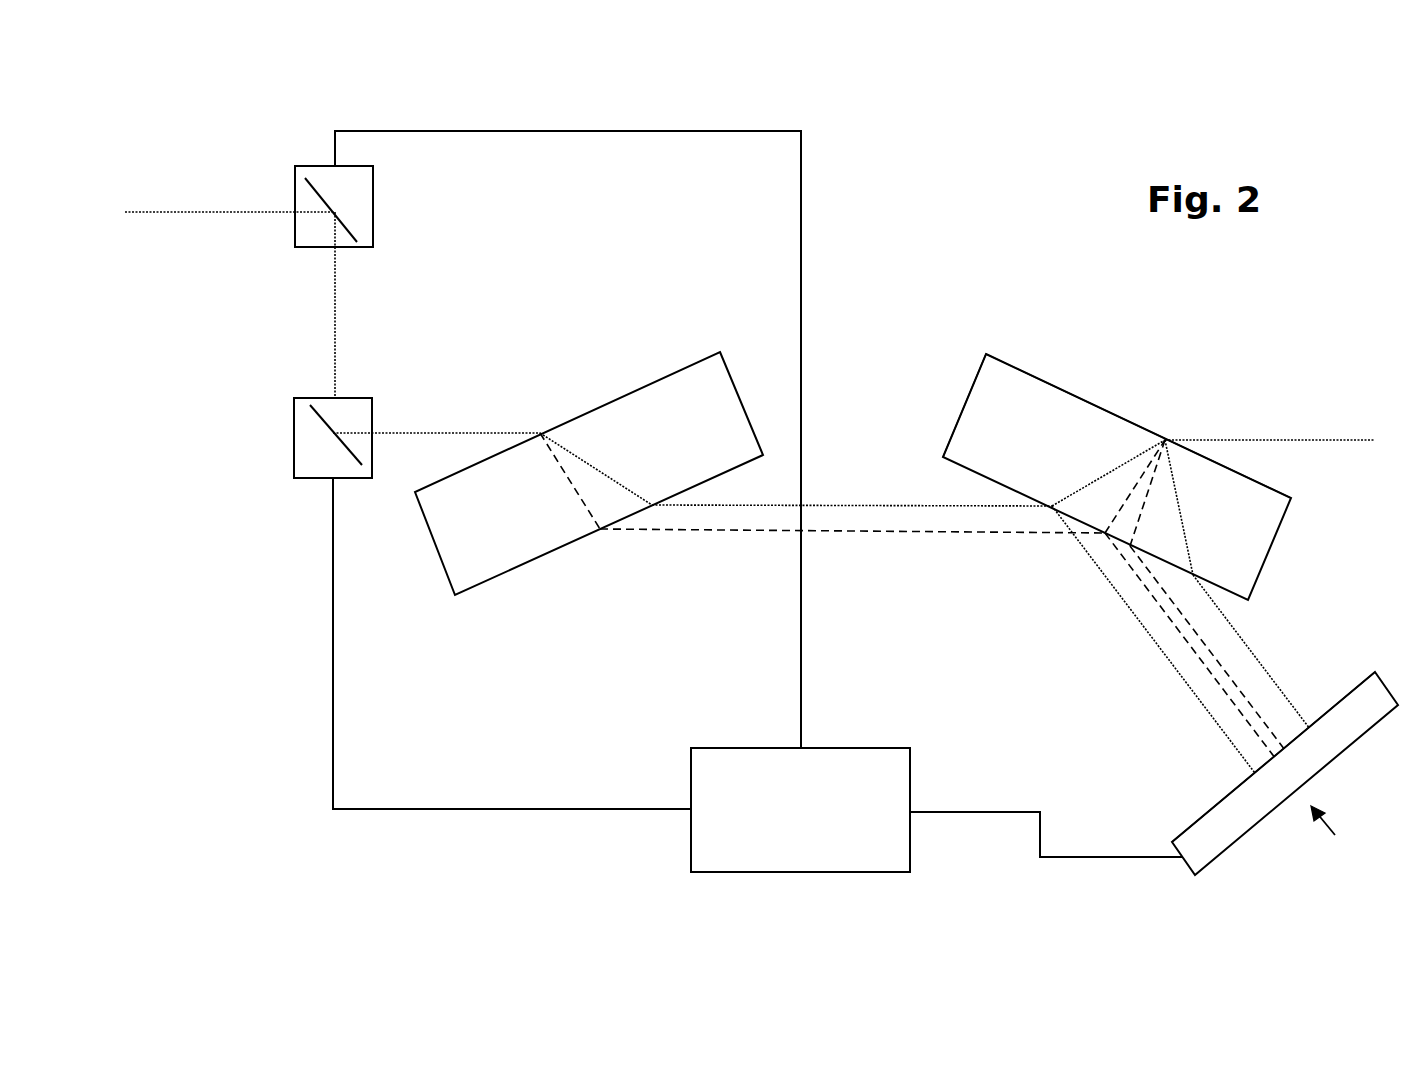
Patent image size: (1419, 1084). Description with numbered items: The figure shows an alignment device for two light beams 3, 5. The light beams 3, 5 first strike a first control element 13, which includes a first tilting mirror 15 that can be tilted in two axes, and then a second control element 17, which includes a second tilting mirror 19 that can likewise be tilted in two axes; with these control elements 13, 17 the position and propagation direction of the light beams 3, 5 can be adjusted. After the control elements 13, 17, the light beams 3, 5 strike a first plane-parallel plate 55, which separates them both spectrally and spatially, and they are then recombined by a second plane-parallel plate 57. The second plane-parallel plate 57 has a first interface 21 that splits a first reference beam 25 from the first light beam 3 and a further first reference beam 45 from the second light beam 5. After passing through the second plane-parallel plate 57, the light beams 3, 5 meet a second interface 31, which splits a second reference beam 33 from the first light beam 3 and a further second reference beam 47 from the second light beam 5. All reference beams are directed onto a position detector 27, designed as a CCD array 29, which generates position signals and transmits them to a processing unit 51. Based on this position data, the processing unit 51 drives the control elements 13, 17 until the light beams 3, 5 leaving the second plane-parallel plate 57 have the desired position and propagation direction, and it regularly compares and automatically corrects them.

The first light beam 3 is at (180, 213).
The second light beam 5 is at (203, 212).
The first control element 13 is at (318, 178).
The first tilting mirror 15 is at (353, 232).
The second control element 17 is at (348, 467).
The second tilting mirror 19 is at (315, 417).
The first interface 21 is at (967, 472).
The first reference beam 25 is at (1132, 577).
The position detector 27 is at (1347, 842).
The CCD array 29 is at (1218, 822).
The second interface 31 is at (1137, 422).
The second reference beam 33 is at (1192, 628).
The further first reference beam 45 is at (1150, 640).
The further second reference beam 47 is at (1273, 682).
The processing unit 51 is at (728, 775).
The first plane-parallel plate 55 is at (660, 402).
The second plane-parallel plate 57 is at (1013, 398).